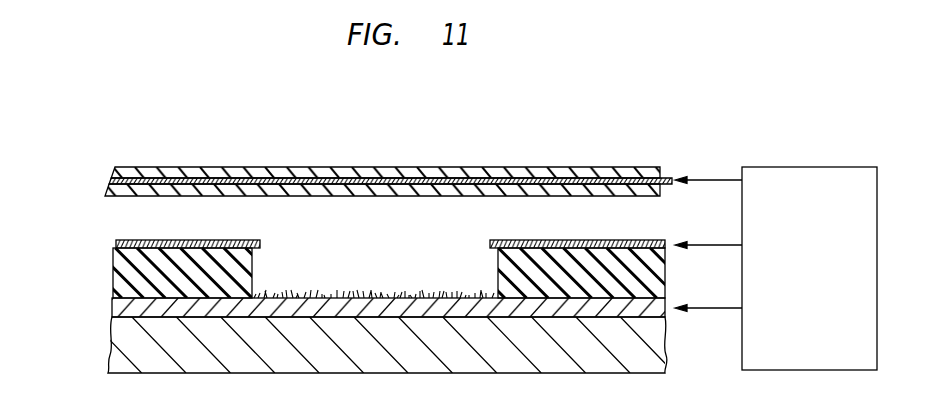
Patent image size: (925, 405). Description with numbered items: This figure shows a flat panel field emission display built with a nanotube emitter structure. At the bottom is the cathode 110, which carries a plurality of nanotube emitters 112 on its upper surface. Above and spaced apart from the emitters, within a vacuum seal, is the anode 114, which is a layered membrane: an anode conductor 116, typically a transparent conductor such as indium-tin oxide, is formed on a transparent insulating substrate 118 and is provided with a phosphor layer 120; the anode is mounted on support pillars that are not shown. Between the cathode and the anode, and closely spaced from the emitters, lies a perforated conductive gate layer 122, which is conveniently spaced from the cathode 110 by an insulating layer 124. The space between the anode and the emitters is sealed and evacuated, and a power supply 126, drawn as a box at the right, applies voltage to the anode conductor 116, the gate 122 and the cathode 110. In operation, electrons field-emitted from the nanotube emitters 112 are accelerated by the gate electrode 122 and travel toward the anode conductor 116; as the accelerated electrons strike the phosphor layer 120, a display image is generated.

The cathode 110 is at (111, 312).
The nanotube emitters 112 is at (368, 296).
The anode 114 is at (372, 182).
The anode conductor 116 is at (674, 178).
The transparent insulating substrate 118 is at (372, 167).
The phosphor layer 120 is at (366, 197).
The perforated conductive gate layer 122 is at (180, 240).
The insulating layer 124 is at (112, 262).
The power supply 126 is at (840, 167).